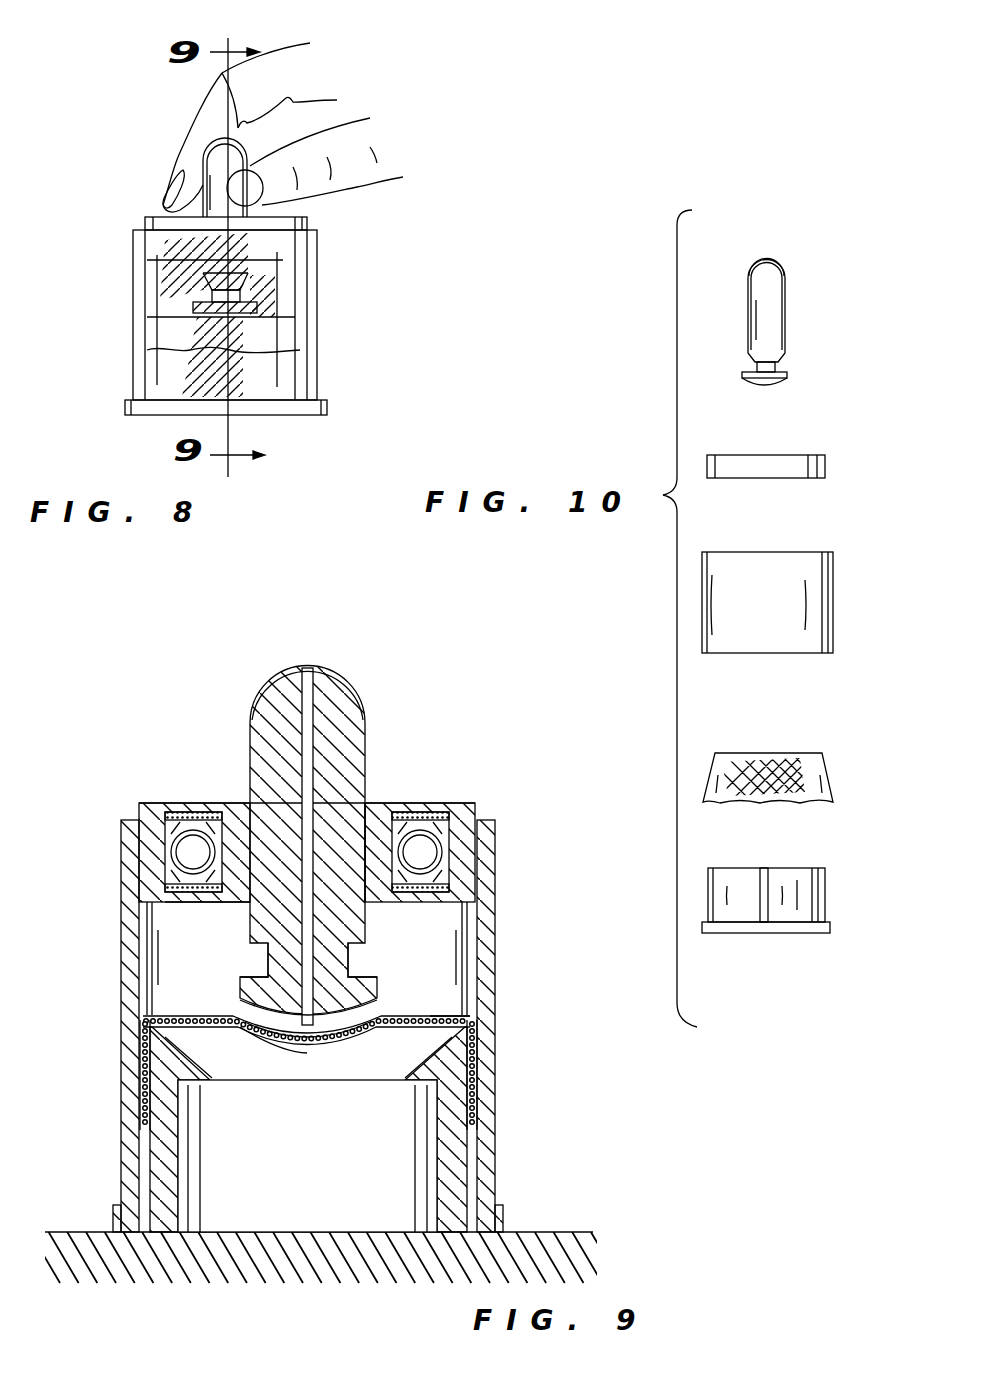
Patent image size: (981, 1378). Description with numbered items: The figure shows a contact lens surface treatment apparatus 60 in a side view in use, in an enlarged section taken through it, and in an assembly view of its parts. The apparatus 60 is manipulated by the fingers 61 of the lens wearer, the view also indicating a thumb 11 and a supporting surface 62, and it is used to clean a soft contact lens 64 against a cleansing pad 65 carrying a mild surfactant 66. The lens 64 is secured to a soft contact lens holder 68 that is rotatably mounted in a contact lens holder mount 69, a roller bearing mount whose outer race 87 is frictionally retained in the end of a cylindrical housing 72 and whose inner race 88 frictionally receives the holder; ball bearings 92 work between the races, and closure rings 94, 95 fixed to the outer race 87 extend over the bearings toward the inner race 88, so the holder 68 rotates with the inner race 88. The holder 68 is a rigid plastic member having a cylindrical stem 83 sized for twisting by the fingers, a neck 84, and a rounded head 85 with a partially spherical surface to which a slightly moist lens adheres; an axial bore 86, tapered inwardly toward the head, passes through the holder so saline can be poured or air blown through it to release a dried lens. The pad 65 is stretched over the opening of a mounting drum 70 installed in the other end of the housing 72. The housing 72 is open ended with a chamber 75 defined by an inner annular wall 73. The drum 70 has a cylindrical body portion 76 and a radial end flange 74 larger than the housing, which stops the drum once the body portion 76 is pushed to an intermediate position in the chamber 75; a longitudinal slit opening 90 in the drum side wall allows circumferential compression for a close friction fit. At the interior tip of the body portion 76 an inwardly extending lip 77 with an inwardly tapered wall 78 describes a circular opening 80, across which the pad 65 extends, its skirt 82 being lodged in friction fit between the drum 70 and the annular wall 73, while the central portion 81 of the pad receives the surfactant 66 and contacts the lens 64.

In FIG. 8, the user's thumb 11 is at (178, 152).
In FIG. 8, the contact lens surface treatment apparatus 60 is at (352, 257).
In FIG. 9, the contact lens surface treatment apparatus 60 is at (372, 665).
In FIG. 8, the fingers 61 is at (350, 153).
In FIG. 9, the support surface 62 is at (62, 1232).
In FIG. 9, the soft contact lens 64 is at (383, 993).
In FIG. 8, the cleansing pad 65 is at (283, 303).
In FIG. 9, the cleansing pad 65 is at (346, 1010).
In FIG. 10, the cleansing pad 65 is at (830, 768).
In FIG. 9, the mild surfactant 66 is at (367, 1013).
In FIG. 8, the soft contact lens holder 68 is at (246, 149).
In FIG. 9, the soft contact lens holder 68 is at (350, 815).
In FIG. 10, the soft contact lens holder 68 is at (790, 317).
In FIG. 8, the contact lens holder mount 69 is at (163, 210).
In FIG. 9, the contact lens holder mount 69 is at (337, 828).
In FIG. 10, the contact lens holder mount 69 is at (803, 453).
In FIG. 8, the mounting drum 70 is at (307, 373).
In FIG. 9, the mounting drum 70 is at (308, 1129).
In FIG. 10, the mounting drum 70 is at (791, 908).
In FIG. 8, the cylindrical housing 72 is at (318, 240).
In FIG. 9, the cylindrical housing 72 is at (120, 952).
In FIG. 10, the cylindrical housing 72 is at (835, 565).
In FIG. 9, the inner annular wall 73 is at (145, 915).
In FIG. 8, the radial end flange 74 is at (226, 407).
In FIG. 9, the radial end flange 74 is at (113, 1217).
In FIG. 10, the radial end flange 74 is at (740, 935).
In FIG. 9, the chamber 75 is at (157, 995).
In FIG. 9, the cylindrical body portion 76 is at (170, 1192).
In FIG. 10, the cylindrical body portion 76 is at (797, 900).
In FIG. 9, the inwardly extending lip 77 is at (425, 1080).
In FIG. 9, the inwardly tapered wall 78 is at (433, 1008).
In FIG. 9, the circular opening 80 is at (342, 1083).
In FIG. 9, the central portion 81 is at (247, 1028).
In FIG. 9, the skirt 82 is at (143, 1070).
In FIG. 9, the stem 83 is at (363, 708).
In FIG. 10, the stem 83 is at (747, 288).
In FIG. 9, the neck 84 is at (350, 960).
In FIG. 10, the neck 84 is at (780, 363).
In FIG. 10, the rounded head 85 is at (777, 385).
In FIG. 9, the axial bore 86 is at (308, 680).
In FIG. 9, the outer race 87 is at (470, 802).
In FIG. 9, the inner race 88 is at (373, 817).
In FIG. 10, the longitudinal slit opening 90 is at (765, 868).
In FIG. 9, the ball bearings 92 is at (195, 842).
In FIG. 9, the closure ring 94 is at (180, 812).
In FIG. 9, the closure ring 95 is at (197, 900).